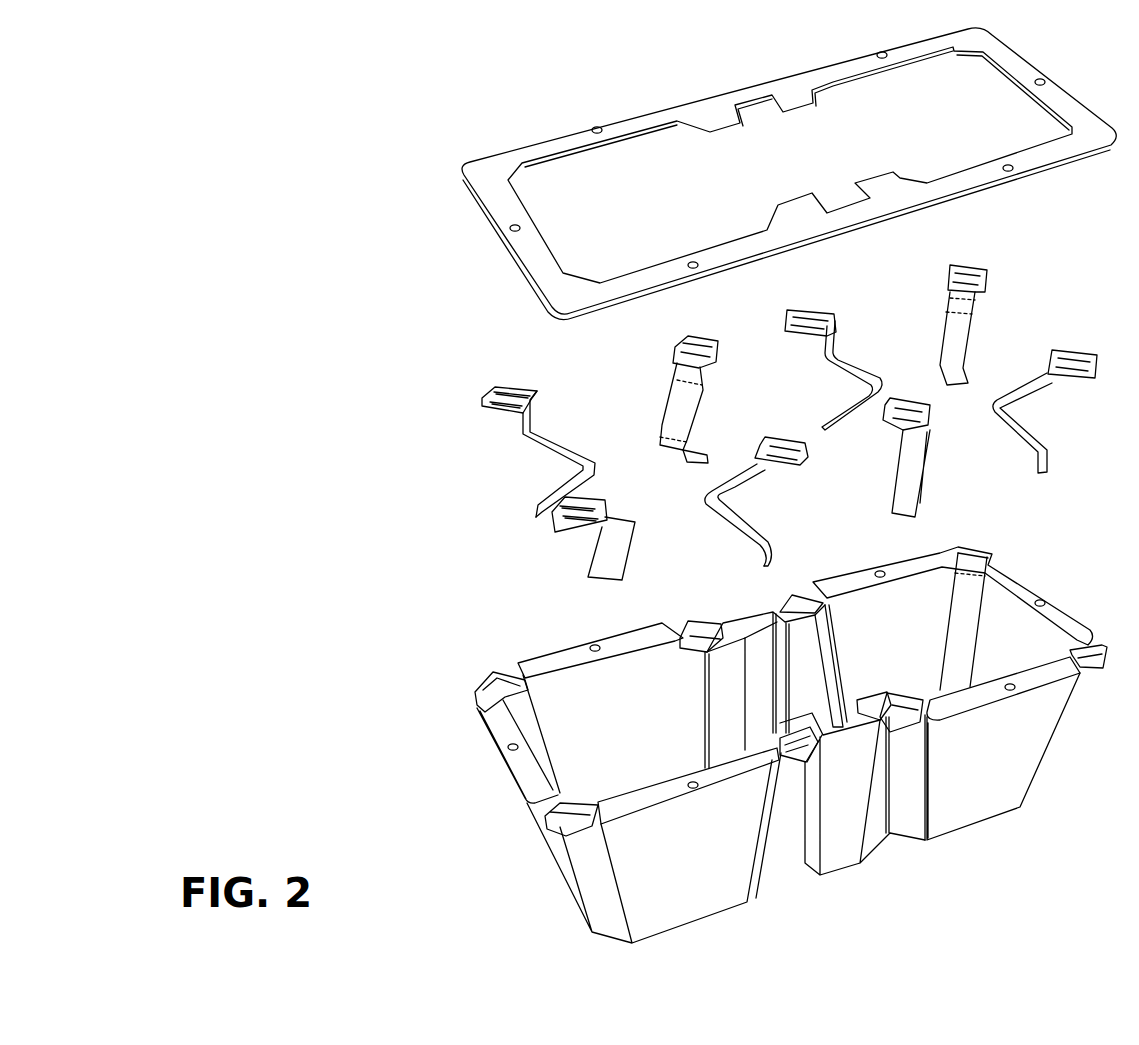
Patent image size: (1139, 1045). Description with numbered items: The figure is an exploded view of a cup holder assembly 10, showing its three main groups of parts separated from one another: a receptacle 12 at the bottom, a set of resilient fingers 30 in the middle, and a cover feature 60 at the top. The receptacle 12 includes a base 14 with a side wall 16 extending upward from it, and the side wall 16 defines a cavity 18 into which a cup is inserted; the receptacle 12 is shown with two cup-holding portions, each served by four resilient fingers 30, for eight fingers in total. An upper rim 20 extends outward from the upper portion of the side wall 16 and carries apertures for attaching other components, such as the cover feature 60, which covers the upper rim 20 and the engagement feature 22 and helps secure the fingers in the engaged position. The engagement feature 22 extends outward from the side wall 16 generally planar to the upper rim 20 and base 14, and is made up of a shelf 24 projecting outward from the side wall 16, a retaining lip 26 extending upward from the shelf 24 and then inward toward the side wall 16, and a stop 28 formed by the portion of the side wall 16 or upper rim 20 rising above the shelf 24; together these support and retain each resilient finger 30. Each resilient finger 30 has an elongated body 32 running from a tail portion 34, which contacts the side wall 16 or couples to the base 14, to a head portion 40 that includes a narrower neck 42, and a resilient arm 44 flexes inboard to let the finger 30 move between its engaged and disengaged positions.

The cup holder assembly 10 is at (287, 130).
The receptacle 12 is at (403, 742).
The base 14 is at (985, 823).
The side wall 16 is at (717, 853).
The cavity 18 is at (577, 695).
The upper rim 20 is at (712, 777).
The engagement feature 22 is at (547, 832).
The shelf 24 is at (603, 823).
The retaining lip 26 is at (568, 830).
The stop 28 is at (553, 792).
The resilient finger 30 is at (567, 428).
The elongated body 32 is at (570, 453).
The tail portion 34 is at (527, 518).
The head portion 40 is at (495, 382).
The neck 42 is at (495, 388).
The resilient arm 44 is at (525, 390).
The cover feature 60 is at (498, 162).